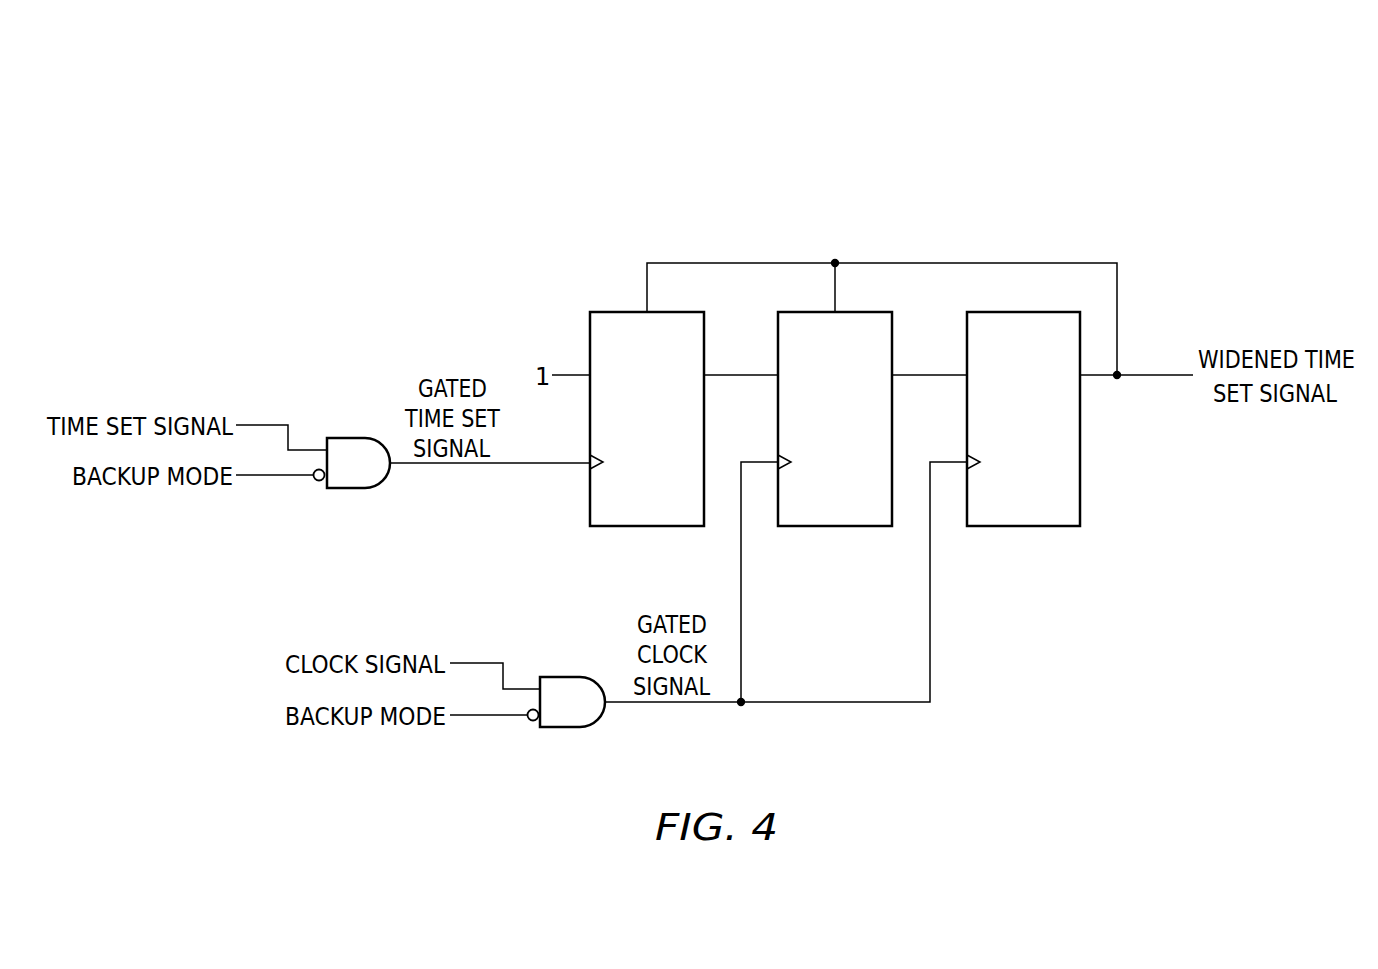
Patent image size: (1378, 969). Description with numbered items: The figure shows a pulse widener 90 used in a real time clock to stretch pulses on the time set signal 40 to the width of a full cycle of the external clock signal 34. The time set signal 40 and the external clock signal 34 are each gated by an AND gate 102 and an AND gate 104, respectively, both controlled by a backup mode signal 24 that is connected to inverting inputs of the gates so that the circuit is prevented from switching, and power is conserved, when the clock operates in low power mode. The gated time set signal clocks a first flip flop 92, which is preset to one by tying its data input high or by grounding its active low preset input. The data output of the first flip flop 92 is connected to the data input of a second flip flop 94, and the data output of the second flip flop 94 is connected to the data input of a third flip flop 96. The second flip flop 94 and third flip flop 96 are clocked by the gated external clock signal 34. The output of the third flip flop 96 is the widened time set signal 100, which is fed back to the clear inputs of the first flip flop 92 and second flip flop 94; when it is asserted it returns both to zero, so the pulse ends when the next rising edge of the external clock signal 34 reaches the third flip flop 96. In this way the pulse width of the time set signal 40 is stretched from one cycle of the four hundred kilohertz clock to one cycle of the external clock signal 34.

The pulse widener 90 is at (1057, 178).
The time set signal 40 is at (260, 425).
The backup mode signal 24 is at (268, 477).
The external clock signal 34 is at (475, 663).
The AND gate 102 is at (358, 489).
The AND gate 104 is at (570, 728).
The first flip flop 92 is at (634, 527).
The second flip flop 94 is at (845, 527).
The third flip flop 96 is at (1033, 527).
The widened time set signal 100 is at (1148, 377).